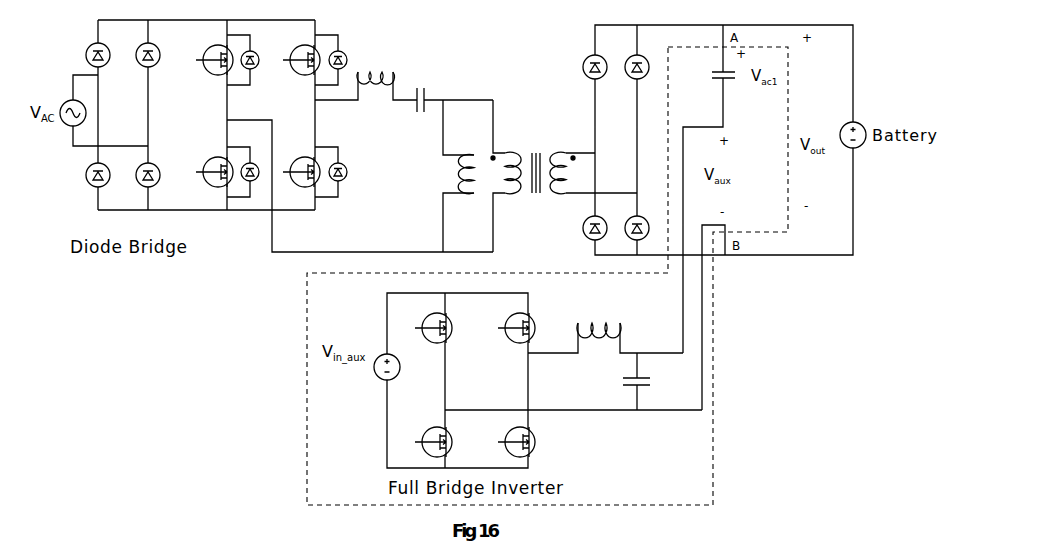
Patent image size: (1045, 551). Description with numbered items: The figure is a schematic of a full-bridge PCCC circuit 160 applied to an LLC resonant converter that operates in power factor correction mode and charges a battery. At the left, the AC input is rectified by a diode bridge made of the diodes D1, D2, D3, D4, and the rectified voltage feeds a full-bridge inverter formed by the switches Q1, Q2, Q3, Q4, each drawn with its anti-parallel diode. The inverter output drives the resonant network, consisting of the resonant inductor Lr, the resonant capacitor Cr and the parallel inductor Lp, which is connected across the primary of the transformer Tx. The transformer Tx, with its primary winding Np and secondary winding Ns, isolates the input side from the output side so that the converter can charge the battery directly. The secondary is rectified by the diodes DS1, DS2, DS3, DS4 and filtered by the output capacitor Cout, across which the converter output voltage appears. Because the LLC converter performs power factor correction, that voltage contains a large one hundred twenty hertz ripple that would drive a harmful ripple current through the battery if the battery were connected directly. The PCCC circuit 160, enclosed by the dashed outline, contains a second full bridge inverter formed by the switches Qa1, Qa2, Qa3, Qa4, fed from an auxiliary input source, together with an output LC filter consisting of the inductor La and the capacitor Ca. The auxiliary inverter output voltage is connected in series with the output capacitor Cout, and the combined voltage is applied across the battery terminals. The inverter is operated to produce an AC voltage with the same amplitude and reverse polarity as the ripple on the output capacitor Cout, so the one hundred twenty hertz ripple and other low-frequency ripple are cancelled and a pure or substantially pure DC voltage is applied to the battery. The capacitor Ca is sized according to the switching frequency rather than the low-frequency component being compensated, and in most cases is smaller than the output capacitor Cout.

The PCCC circuit 160 is at (720, 373).
The diode bridge diode D1 is at (106, 47).
The diode bridge diode D2 is at (156, 47).
The diode bridge diode D3 is at (156, 168).
The diode bridge diode D4 is at (106, 168).
The primary switch Q1 is at (227, 51).
The primary switch Q2 is at (227, 161).
The primary switch Q3 is at (315, 51).
The primary switch Q4 is at (315, 161).
The resonant inductor Lr is at (376, 66).
The resonant capacitor Cr is at (420, 87).
The parallel inductor Lp is at (455, 173).
The transformer Tx is at (538, 162).
The transformer primary winding Np is at (502, 173).
The transformer secondary winding Ns is at (572, 173).
The rectifier diode DS1 is at (602, 56).
The rectifier diode DS2 is at (602, 222).
The rectifier diode DS3 is at (644, 56).
The rectifier diode DS4 is at (644, 222).
The output capacitor Cout is at (711, 85).
The auxiliary inverter switch Qa1 is at (445, 323).
The auxiliary inverter switch Qa2 is at (445, 436).
The auxiliary inverter switch Qa3 is at (529, 323).
The auxiliary inverter switch Qa4 is at (529, 436).
The auxiliary inductor La is at (599, 318).
The capacitor Ca is at (630, 369).